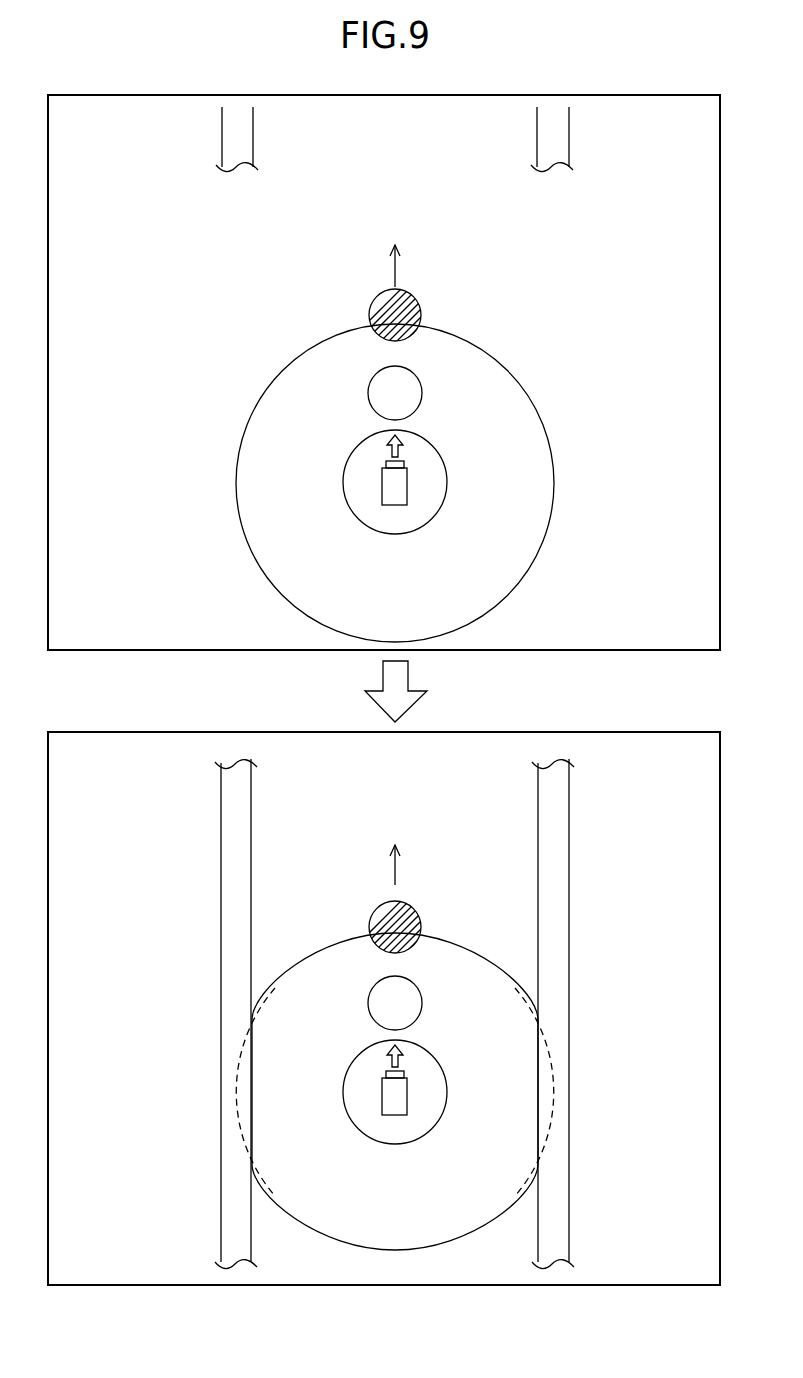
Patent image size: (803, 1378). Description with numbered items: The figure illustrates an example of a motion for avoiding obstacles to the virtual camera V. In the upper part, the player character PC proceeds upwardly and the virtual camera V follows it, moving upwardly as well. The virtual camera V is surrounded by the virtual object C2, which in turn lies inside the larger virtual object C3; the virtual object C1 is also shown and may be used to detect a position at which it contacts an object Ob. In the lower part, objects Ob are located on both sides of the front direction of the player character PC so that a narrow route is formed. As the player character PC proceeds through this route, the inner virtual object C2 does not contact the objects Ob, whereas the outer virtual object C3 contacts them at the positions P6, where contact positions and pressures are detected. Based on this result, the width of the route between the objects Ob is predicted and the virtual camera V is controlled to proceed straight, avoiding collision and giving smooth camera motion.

The object Ob is at (222, 138).
The player character PC is at (418, 304).
The virtual object C1 is at (419, 383).
The virtual object C2 is at (445, 468).
The virtual object C3 is at (518, 380).
The virtual camera V is at (407, 486).
The contact point with obstacle P6 is at (252, 1092).